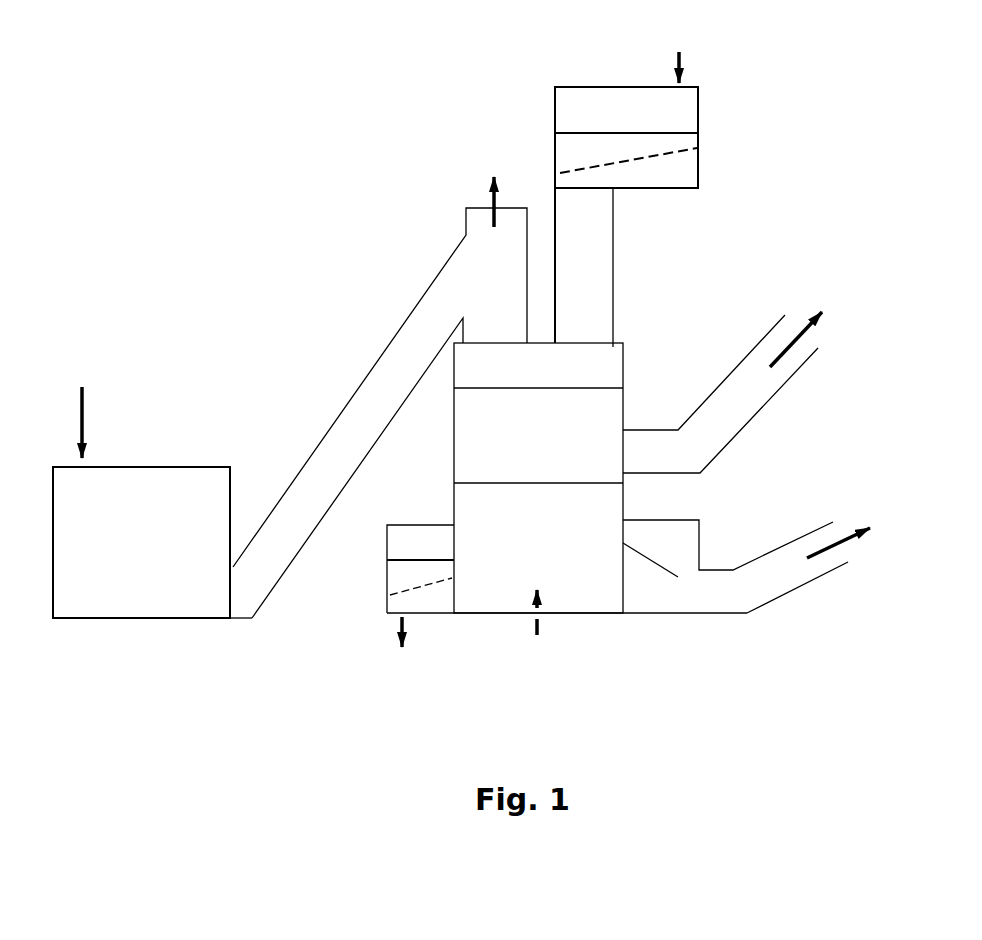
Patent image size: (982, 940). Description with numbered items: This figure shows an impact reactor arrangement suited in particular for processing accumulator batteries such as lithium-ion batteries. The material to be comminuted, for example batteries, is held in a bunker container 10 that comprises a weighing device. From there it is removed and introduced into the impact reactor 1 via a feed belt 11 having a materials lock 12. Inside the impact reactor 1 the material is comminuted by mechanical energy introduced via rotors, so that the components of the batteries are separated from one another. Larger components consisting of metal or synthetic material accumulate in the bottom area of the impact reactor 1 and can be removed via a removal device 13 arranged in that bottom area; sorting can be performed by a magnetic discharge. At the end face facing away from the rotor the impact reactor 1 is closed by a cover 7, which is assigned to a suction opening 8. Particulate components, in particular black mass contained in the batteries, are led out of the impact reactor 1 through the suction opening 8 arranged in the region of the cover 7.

The impact reactor 1 is at (567, 526).
The cover 7 is at (580, 387).
The suction opening 8 is at (737, 402).
The bunker container 10 is at (152, 549).
The feed belt 11 is at (312, 498).
The materials lock 12 is at (427, 182).
The removal device 13 is at (746, 619).